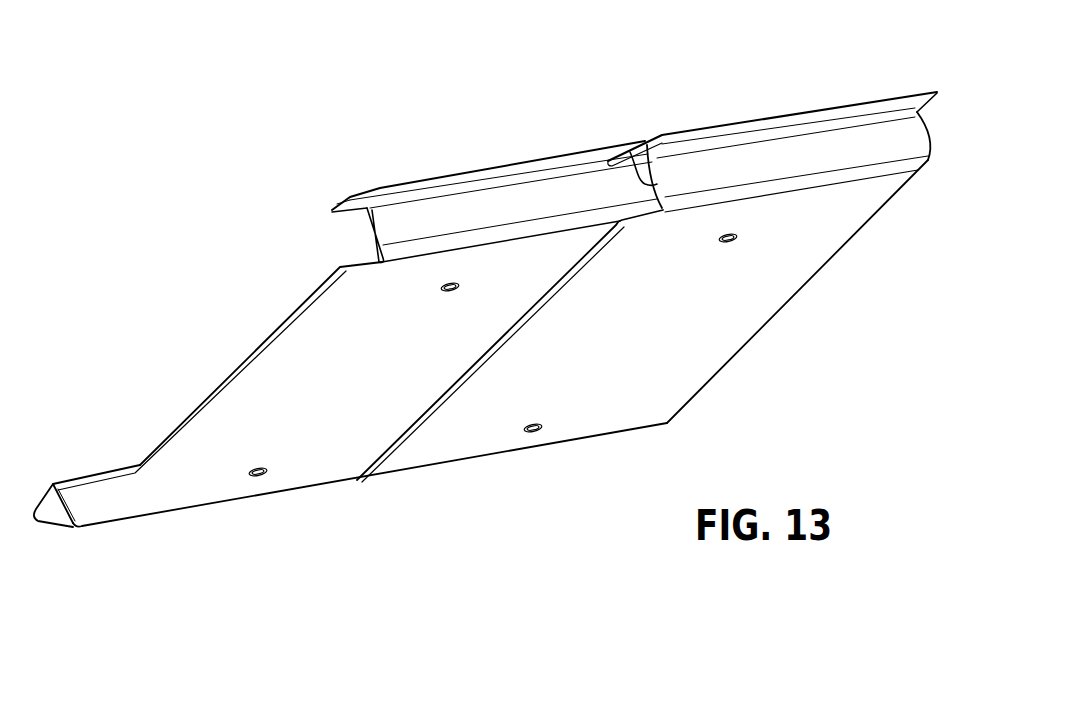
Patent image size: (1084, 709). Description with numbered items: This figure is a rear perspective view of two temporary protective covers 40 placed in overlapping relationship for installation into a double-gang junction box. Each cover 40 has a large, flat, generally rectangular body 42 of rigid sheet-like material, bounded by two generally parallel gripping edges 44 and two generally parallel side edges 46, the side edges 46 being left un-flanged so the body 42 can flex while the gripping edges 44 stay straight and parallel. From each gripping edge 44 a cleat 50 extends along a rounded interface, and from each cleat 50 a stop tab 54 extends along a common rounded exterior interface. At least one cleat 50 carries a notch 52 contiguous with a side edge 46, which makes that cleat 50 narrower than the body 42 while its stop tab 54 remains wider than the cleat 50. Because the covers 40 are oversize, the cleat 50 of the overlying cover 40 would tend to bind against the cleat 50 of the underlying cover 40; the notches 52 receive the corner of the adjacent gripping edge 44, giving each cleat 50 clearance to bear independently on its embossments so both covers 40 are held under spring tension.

The temporary protective cover 40 is at (391, 174).
The body 42 is at (306, 471).
The gripping edge 44 is at (858, 179).
The side edge 46 is at (240, 362).
The cleat 50 is at (450, 220).
The notch 52 is at (630, 152).
The stop tab 54 is at (423, 181).